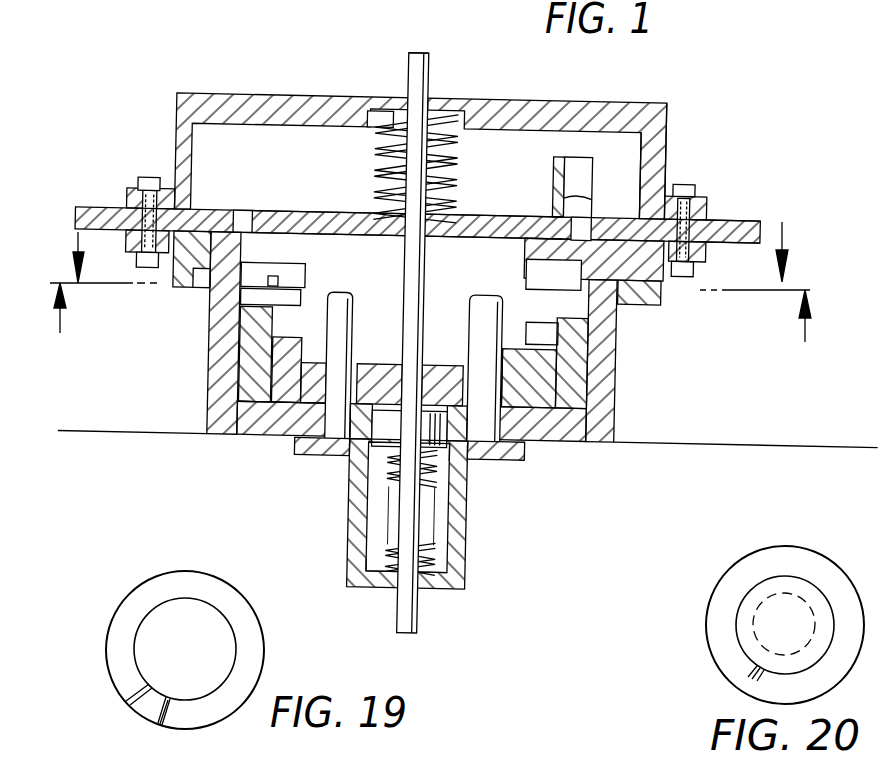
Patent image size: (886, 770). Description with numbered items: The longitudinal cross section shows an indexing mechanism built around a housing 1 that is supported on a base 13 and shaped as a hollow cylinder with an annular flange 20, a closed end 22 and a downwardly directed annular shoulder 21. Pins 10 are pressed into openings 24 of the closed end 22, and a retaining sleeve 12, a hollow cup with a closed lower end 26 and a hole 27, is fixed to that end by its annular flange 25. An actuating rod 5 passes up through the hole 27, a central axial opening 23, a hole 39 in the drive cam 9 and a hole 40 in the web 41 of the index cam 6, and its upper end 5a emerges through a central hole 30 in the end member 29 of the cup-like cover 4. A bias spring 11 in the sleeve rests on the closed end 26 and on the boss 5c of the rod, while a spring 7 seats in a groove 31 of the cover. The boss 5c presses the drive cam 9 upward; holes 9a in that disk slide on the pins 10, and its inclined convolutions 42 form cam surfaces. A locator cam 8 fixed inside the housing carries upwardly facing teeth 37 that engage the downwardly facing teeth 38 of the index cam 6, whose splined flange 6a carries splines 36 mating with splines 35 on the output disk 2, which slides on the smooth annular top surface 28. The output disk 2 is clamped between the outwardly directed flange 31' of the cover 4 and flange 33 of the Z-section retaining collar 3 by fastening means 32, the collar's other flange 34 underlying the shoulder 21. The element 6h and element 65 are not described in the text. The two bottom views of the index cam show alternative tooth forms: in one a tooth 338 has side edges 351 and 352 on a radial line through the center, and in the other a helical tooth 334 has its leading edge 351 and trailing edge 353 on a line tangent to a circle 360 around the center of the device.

In FIG. 1, the housing 1 is at (615, 331).
In FIG. 1, the output disk 2 is at (738, 215).
In FIG. 1, the retaining collar 3 is at (686, 296).
In FIG. 1, the cover 4 is at (661, 130).
In FIG. 1, the actuating rod 5 is at (411, 125).
In FIG. 1, the upper end of actuating rod 5a is at (424, 65).
In FIG. 1, the boss 5c is at (466, 466).
In FIG. 1, the index cam 6 is at (558, 155).
In FIG. 1, the splined flange 6a is at (589, 194).
In FIG. 1, the lever pivot 6h is at (269, 285).
In FIG. 1, the spring 7 is at (368, 149).
In FIG. 1, the locator cam 8 is at (591, 364).
In FIG. 1, the drive cam 9 is at (561, 387).
In FIG. 1, the holes 9a is at (504, 385).
In FIG. 1, the pins 10 is at (351, 301).
In FIG. 1, the bias spring 11 is at (437, 552).
In FIG. 1, the retaining sleeve 12 is at (465, 574).
In FIG. 1, the base 13 is at (665, 432).
In FIG. 1, the annular flange 20 is at (184, 280).
In FIG. 1, the annular shoulder 21 is at (214, 304).
In FIG. 1, the closed end 22 is at (254, 430).
In FIG. 1, the central axial opening 23 is at (374, 421).
In FIG. 1, the openings 24 is at (311, 457).
In FIG. 1, the annular flange 25 is at (520, 453).
In FIG. 1, the closed lower end 26 is at (437, 590).
In FIG. 1, the hole 27 is at (408, 590).
In FIG. 1, the annular top surface 28 is at (238, 234).
In FIG. 1, the end member 29 is at (560, 102).
In FIG. 1, the central hole 30 is at (425, 110).
In FIG. 1, the groove 31 is at (433, 137).
In FIG. 1, the annular flange 31' is at (732, 211).
In FIG. 1, the fastening means 32 is at (677, 184).
In FIG. 1, the flange 33 is at (705, 239).
In FIG. 1, the flange 34 is at (629, 296).
In FIG. 1, the splines 35 is at (567, 202).
In FIG. 1, the splines 36 is at (585, 166).
In FIG. 1, the teeth 37 is at (264, 303).
In FIG. 1, the teeth 38 is at (527, 276).
In FIG. 1, the hole 39 is at (421, 395).
In FIG. 1, the hole 40 is at (430, 238).
In FIG. 1, the web 41 is at (343, 242).
In FIG. 1, the convolutions 42 is at (525, 330).
In FIG. 19, the element 65 is at (255, 769).
In FIG. 20, the tooth 334 is at (735, 672).
In FIG. 19, the tooth 338 is at (145, 704).
In FIG. 19, the leading edge 351 is at (126, 700).
In FIG. 20, the leading edge 351 is at (783, 657).
In FIG. 19, the side edge 352 is at (170, 718).
In FIG. 20, the trailing edge 353 is at (762, 672).
In FIG. 20, the circle 360 is at (757, 612).